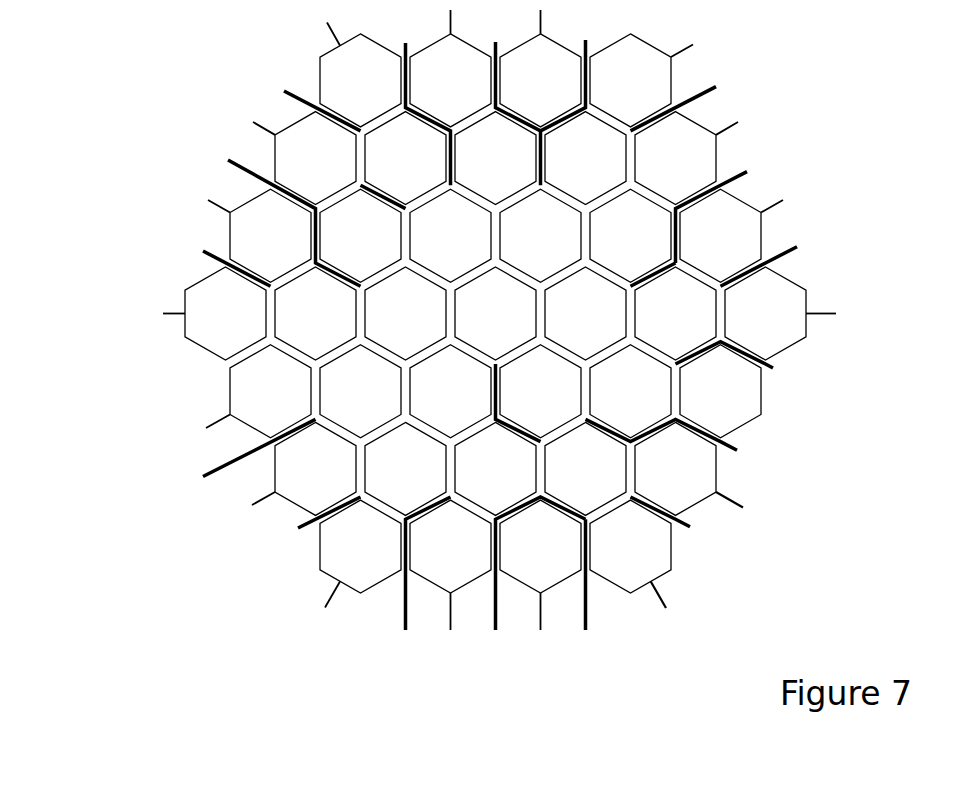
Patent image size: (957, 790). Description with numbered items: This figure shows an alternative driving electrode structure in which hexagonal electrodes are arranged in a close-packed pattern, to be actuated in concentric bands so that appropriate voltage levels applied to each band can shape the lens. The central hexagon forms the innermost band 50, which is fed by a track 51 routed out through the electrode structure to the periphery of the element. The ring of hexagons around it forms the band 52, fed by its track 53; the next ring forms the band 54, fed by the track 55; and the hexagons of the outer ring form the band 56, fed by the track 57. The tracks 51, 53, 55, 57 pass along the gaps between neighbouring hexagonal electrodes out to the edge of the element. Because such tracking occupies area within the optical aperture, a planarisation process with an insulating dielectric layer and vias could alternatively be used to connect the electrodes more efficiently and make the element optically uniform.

The innermost band 50 is at (478, 328).
The track 51 is at (590, 611).
The band 52 is at (434, 250).
The track 53 is at (737, 452).
The band 54 is at (388, 172).
The track 55 is at (767, 370).
The band 56 is at (658, 483).
The track 57 is at (743, 508).